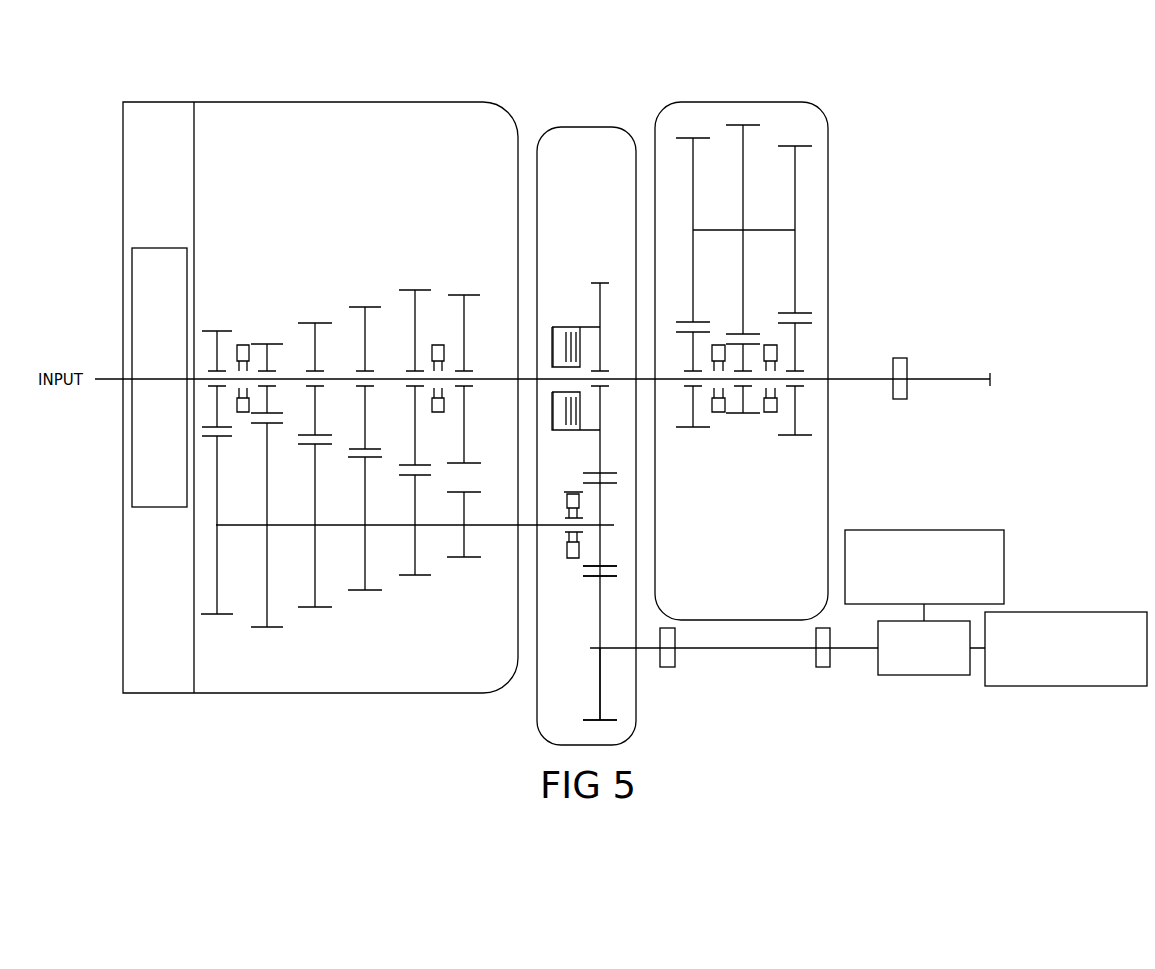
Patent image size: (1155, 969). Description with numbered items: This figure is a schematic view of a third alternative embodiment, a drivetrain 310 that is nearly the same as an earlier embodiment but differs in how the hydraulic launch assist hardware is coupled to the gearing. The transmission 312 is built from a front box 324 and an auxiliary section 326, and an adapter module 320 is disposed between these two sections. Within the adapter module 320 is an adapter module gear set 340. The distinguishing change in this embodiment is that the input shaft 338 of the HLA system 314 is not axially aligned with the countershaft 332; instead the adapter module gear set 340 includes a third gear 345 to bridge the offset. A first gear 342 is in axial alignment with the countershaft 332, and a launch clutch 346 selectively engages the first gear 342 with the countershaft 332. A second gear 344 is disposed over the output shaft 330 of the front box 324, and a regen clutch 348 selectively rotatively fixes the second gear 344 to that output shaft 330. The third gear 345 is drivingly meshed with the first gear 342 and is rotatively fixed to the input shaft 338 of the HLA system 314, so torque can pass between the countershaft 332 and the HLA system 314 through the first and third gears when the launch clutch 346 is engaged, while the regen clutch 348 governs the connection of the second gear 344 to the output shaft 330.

The drivetrain 310 is at (847, 115).
The transmission 312 is at (546, 100).
The HLA system 314 is at (1039, 525).
The adapter module 320 is at (588, 127).
The front box 324 is at (357, 102).
The auxiliary section 326 is at (742, 102).
The output shaft 330 is at (393, 377).
The countershaft 332 is at (438, 530).
The input shaft 338 is at (855, 652).
The adapter module gear set 340 is at (585, 218).
The first gear 342 is at (583, 578).
The second gear 344 is at (604, 282).
The third gear 345 is at (598, 692).
The launch clutch 346 is at (570, 491).
The regen clutch 348 is at (553, 327).